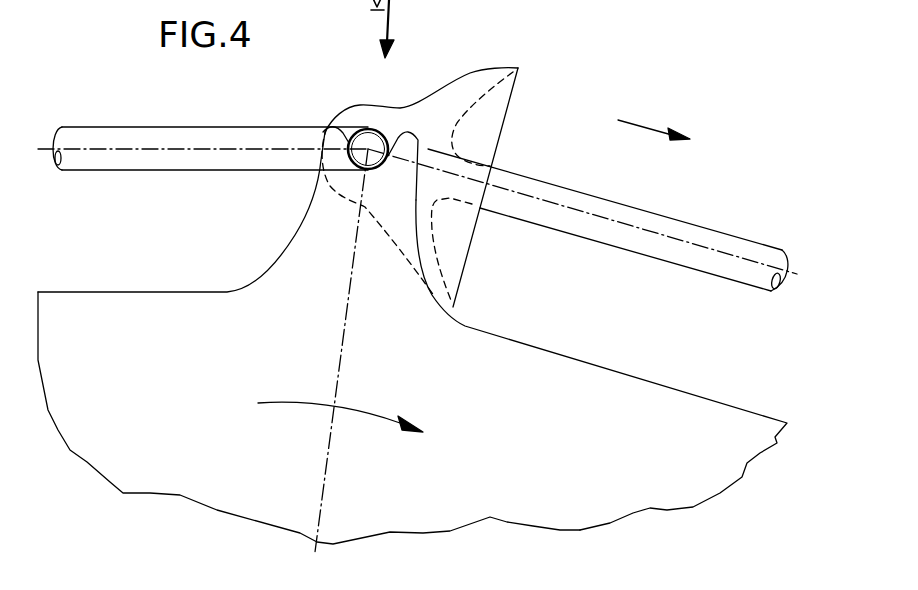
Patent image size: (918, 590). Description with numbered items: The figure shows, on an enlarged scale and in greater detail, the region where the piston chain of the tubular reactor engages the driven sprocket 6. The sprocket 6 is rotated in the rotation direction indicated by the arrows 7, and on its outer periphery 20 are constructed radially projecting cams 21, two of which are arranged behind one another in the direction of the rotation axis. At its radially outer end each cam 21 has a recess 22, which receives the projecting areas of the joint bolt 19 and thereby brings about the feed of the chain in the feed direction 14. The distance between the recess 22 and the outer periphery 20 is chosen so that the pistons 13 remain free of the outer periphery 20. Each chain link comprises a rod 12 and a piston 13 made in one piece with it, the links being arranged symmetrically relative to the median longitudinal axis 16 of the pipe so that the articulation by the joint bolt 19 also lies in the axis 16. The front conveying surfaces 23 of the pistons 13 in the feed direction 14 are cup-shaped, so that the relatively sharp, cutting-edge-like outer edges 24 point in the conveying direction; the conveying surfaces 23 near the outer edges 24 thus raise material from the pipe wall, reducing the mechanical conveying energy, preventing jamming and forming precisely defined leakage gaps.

The sprocket 6 is at (107, 328).
The arrows 7 is at (373, 403).
The rod 12 is at (162, 138).
The piston 13 is at (451, 159).
The feed direction 14 is at (650, 127).
The median longitudinal axis 16 is at (627, 225).
The joint bolt 19 is at (362, 143).
The outer periphery 20 is at (612, 370).
The cams 21 is at (335, 133).
The recess 22 is at (395, 147).
The conveying surface 23 is at (477, 112).
The outer edge 24 is at (517, 70).